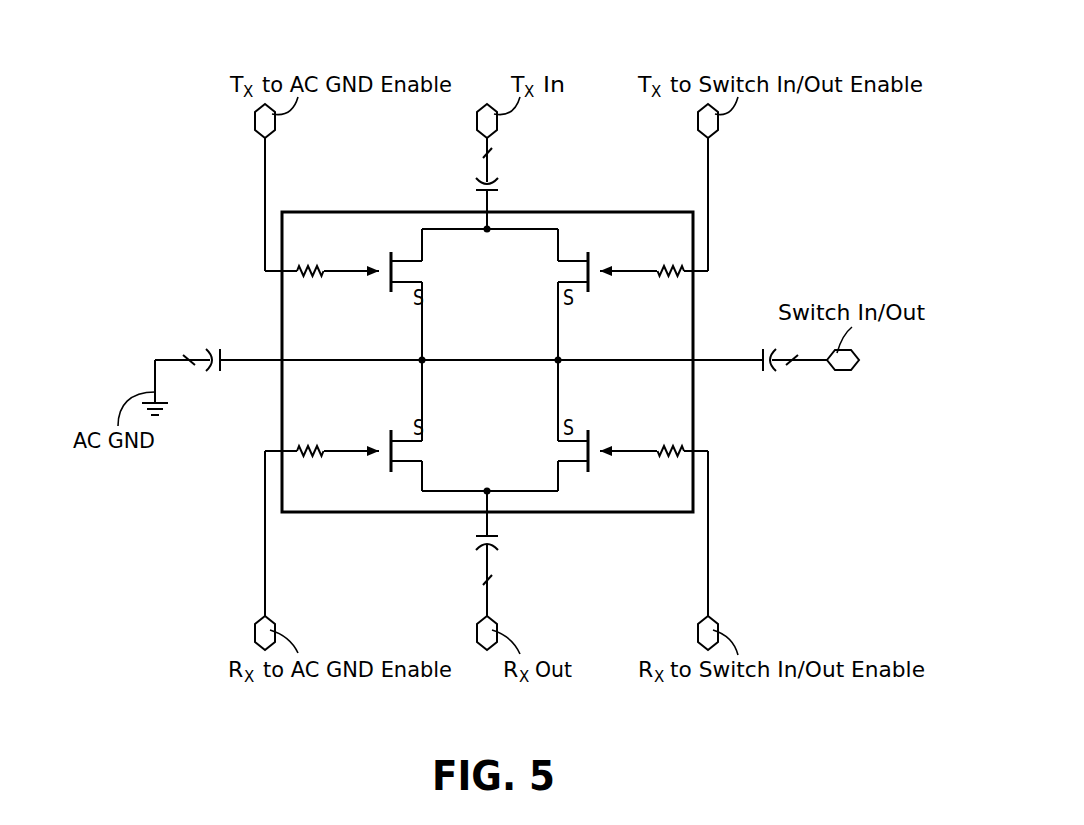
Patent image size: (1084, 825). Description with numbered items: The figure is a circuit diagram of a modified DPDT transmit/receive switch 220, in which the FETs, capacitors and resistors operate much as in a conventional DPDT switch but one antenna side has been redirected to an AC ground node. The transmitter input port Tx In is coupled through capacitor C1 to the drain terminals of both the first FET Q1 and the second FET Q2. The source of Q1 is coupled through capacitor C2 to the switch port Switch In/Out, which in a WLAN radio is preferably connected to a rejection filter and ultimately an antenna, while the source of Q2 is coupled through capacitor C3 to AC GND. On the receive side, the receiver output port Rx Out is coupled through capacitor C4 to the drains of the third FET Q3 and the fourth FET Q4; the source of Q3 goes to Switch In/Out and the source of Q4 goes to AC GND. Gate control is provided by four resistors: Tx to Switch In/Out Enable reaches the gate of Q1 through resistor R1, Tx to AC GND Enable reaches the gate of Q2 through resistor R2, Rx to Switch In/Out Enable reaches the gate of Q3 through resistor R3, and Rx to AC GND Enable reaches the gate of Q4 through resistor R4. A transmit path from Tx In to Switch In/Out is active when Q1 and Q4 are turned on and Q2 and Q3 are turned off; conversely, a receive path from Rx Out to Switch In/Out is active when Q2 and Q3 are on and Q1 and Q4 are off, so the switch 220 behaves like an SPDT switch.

The modified DPDT T/R switch 220 is at (150, 88).
The capacitor C1 is at (512, 188).
The capacitor C2 is at (763, 381).
The capacitor C3 is at (208, 381).
The capacitor C4 is at (512, 538).
The resistor R1 is at (669, 284).
The resistor R2 is at (306, 284).
The resistor R3 is at (671, 438).
The resistor R4 is at (306, 440).
The first FET Q1 is at (554, 268).
The second FET Q2 is at (433, 268).
The third FET Q3 is at (554, 452).
The fourth FET Q4 is at (433, 452).